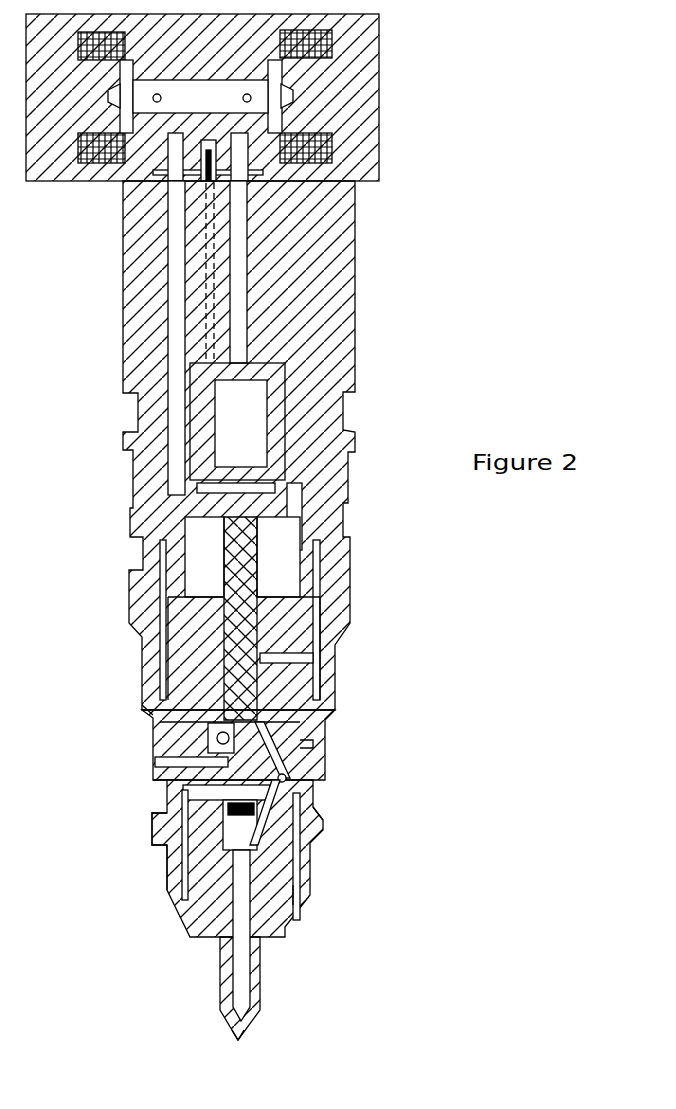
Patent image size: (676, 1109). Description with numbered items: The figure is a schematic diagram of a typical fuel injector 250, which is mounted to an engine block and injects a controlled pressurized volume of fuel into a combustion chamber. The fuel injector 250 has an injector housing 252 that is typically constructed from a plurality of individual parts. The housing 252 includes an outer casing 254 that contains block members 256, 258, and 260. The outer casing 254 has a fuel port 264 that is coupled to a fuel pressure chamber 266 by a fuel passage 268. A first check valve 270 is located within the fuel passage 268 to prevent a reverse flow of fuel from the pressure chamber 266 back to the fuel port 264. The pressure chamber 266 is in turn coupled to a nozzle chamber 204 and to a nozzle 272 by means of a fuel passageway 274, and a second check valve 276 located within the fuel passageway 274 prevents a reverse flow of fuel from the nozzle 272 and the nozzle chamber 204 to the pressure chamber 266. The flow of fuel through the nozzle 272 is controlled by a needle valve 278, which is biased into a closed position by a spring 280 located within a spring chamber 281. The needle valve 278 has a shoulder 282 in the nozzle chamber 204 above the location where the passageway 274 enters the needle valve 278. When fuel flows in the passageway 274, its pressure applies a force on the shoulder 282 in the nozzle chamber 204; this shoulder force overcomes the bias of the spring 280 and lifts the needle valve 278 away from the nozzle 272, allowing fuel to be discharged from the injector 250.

The fuel injector 250 is at (476, 376).
The injector housing 252 is at (118, 383).
The outer casing 254 is at (343, 608).
The block member 256 is at (193, 923).
The nozzle chamber 204 is at (257, 960).
The block member 258 is at (312, 746).
The block member 260 is at (313, 729).
The fuel port 264 is at (160, 767).
The fuel pressure chamber 266 is at (153, 703).
The fuel passage 268 is at (158, 820).
The first check valve 270 is at (153, 757).
The nozzle 272 is at (240, 1023).
The fuel passageway 274 is at (300, 875).
The second check valve 276 is at (323, 810).
The needle valve 278 is at (245, 983).
The spring 280 is at (177, 870).
The spring chamber 281 is at (170, 848).
The shoulder 282 is at (297, 892).